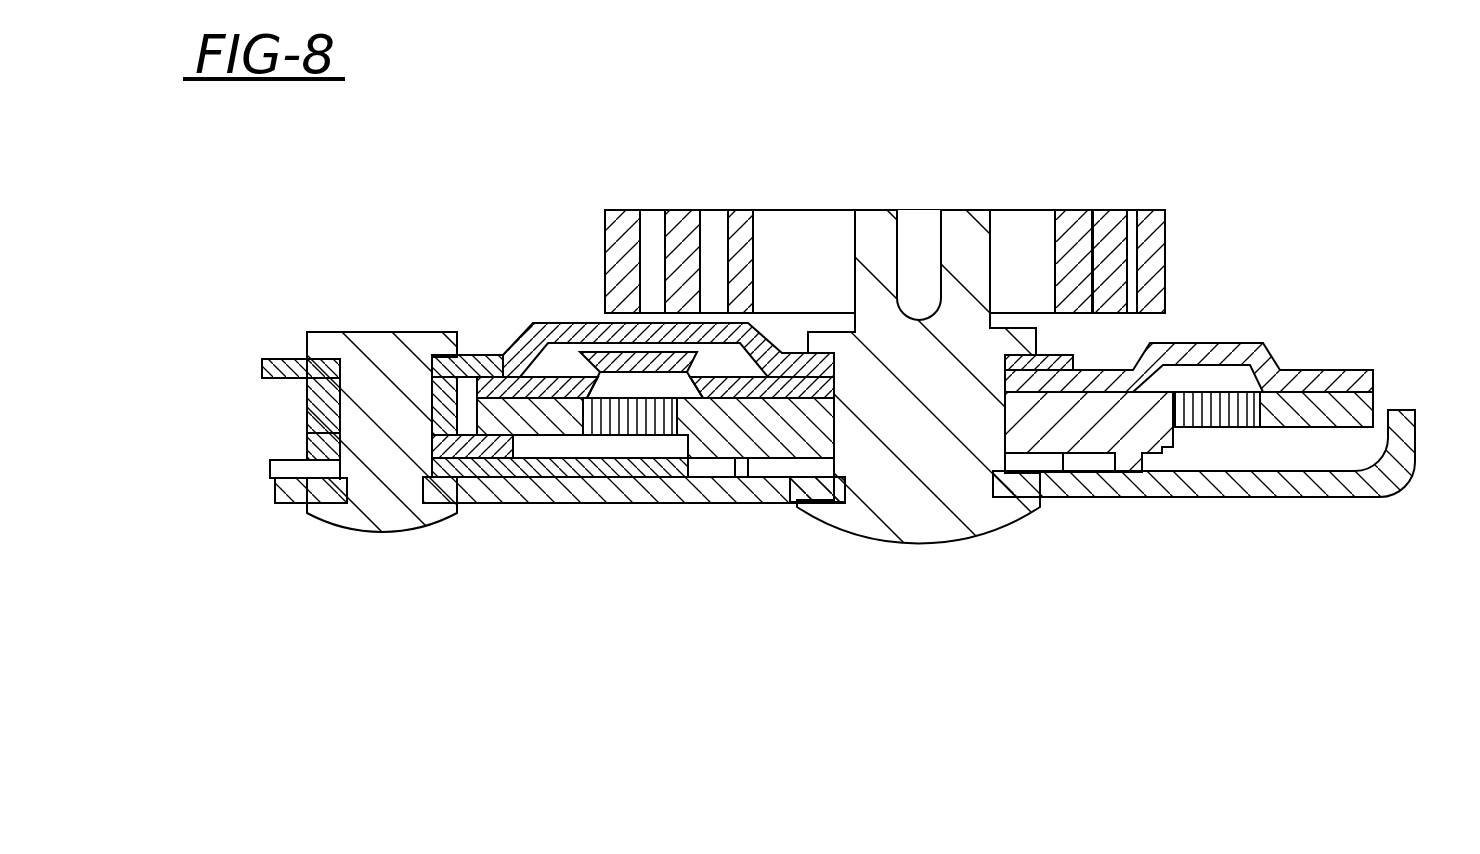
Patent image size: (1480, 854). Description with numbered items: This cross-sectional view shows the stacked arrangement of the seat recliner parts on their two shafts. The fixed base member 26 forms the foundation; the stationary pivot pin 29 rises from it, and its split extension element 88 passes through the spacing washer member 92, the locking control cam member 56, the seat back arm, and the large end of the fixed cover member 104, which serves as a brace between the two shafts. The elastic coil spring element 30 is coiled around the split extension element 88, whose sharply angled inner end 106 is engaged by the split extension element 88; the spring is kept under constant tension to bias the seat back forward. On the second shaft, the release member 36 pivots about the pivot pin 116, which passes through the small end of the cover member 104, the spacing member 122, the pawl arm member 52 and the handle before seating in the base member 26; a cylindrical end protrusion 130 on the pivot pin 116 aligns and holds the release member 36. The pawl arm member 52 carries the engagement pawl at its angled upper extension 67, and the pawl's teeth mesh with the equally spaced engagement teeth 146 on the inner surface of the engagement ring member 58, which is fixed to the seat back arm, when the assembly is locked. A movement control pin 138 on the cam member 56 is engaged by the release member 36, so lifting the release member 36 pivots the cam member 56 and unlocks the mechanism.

The fixed base member 26 is at (1307, 492).
The stationary pivot pin 29 is at (857, 536).
The elastic coil spring element 30 is at (745, 210).
The release member 36 is at (515, 503).
The pawl arm member 52 is at (315, 441).
The locking control cam member 56 is at (758, 456).
The engagement ring member 58 is at (1378, 405).
The angled upper extension 67 is at (537, 503).
The split extension element 88 is at (963, 222).
The spacing washer member 92 is at (795, 466).
The fixed cover member 104 is at (262, 360).
The sharply angled inner end 106 is at (913, 208).
The pivot pin 116 is at (352, 535).
The spacing member 122 is at (315, 410).
The cylindrical end protrusion 130 is at (390, 342).
The movement control pin 138 is at (705, 466).
The engagement teeth 146 is at (625, 436).